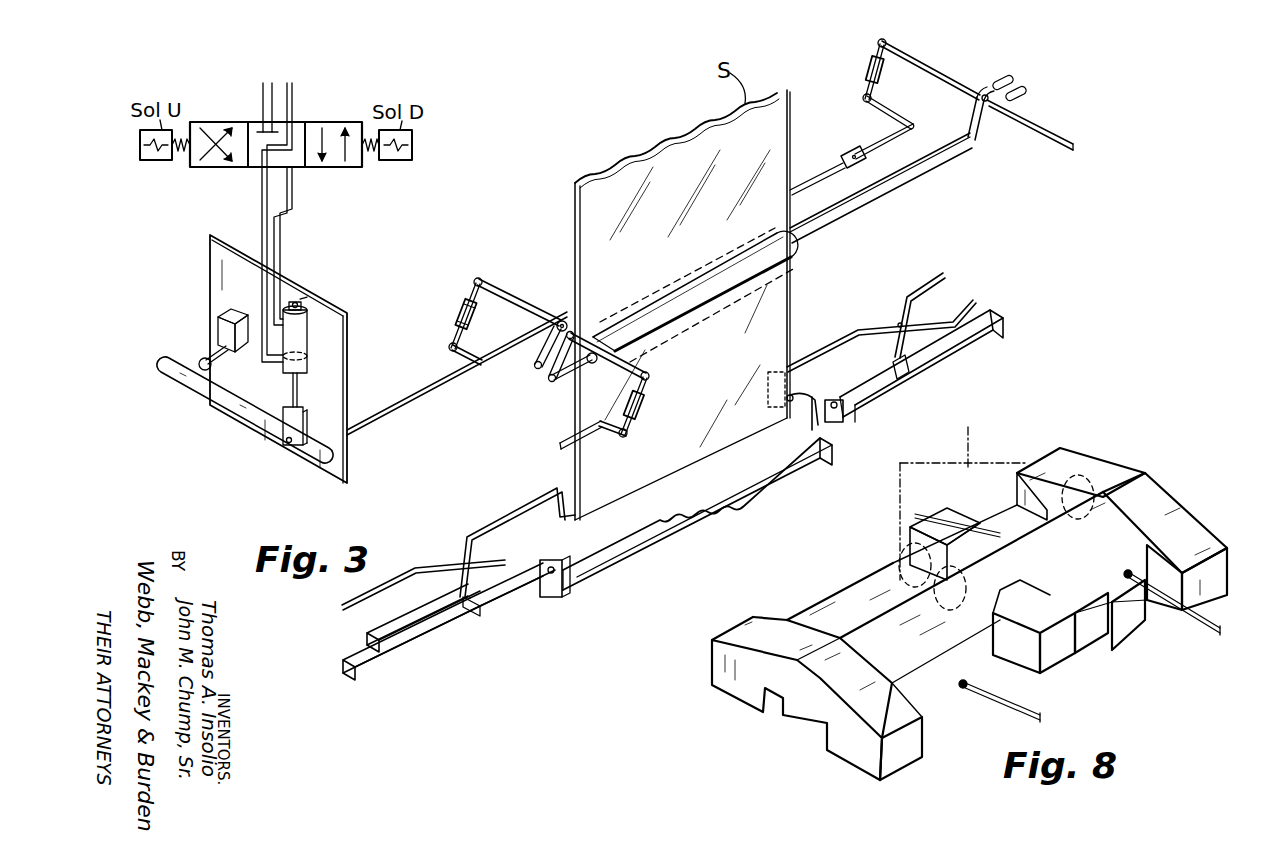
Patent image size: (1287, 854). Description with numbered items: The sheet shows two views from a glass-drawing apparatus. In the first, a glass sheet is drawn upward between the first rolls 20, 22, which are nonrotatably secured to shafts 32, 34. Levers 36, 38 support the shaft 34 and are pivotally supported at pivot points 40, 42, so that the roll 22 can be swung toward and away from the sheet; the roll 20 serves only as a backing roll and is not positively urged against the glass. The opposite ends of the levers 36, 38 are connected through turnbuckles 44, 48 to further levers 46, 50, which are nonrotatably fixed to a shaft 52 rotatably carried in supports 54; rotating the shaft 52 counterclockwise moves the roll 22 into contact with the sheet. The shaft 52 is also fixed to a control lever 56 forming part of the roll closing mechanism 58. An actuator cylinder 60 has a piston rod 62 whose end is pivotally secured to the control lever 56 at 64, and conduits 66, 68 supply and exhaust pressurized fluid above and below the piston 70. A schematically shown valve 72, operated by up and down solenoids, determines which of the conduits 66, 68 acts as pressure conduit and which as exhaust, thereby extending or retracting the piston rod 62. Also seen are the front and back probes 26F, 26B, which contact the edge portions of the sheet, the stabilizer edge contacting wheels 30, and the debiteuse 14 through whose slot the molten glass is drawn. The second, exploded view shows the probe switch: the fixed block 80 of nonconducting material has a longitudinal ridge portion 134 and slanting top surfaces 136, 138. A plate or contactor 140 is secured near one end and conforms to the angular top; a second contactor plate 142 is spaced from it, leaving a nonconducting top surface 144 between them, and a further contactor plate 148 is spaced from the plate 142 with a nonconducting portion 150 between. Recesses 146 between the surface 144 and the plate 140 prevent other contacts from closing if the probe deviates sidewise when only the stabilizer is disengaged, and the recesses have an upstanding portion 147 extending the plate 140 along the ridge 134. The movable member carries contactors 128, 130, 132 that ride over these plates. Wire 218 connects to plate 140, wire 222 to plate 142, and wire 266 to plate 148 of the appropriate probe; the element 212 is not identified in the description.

In FIG. 3, the debiteuse 14 is at (690, 525).
In FIG. 3, the first roll 20 is at (667, 327).
In FIG. 3, the first roll 22 is at (718, 253).
In FIG. 3, the back probe 26B is at (580, 512).
In FIG. 3, the front probe 26F is at (872, 351).
In FIG. 3, the edge contacting wheels 30 is at (585, 529).
In FIG. 3, the shaft 32 is at (552, 383).
In FIG. 3, the shaft 34 is at (543, 376).
In FIG. 3, the lever 36 is at (543, 353).
In FIG. 3, the lever 38 is at (970, 120).
In FIG. 3, the pivot point 40 is at (567, 322).
In FIG. 3, the pivot point 42 is at (977, 93).
In FIG. 3, the turnbuckle 44 is at (465, 315).
In FIG. 3, the lever 46 is at (453, 352).
In FIG. 3, the turnbuckle 48 is at (868, 71).
In FIG. 3, the lever 50 is at (902, 114).
In FIG. 3, the shaft 52 is at (804, 177).
In FIG. 3, the supports 54 is at (847, 148).
In FIG. 3, the control lever 56 is at (173, 373).
In FIG. 3, the roll closing mechanism 58 is at (152, 296).
In FIG. 3, the actuator cylinder 60 is at (308, 335).
In FIG. 3, the piston rod 62 is at (298, 392).
In FIG. 3, the pivotal connection 64 is at (300, 437).
In FIG. 3, the conduit 66 is at (280, 236).
In FIG. 3, the conduit 68 is at (262, 197).
In FIG. 3, the piston 70 is at (307, 356).
In FIG. 3, the valve 72 is at (327, 122).
In FIG. 8, the fixed block 80 is at (1170, 490).
In FIG. 8, the contactor 128 is at (1093, 456).
In FIG. 8, the contactor 130 is at (948, 723).
In FIG. 8, the contactor 132 is at (897, 557).
In FIG. 8, the ridge portion 134 is at (815, 665).
In FIG. 8, the slanting top surface 136 is at (900, 738).
In FIG. 8, the slanting top surface 138 is at (735, 633).
In FIG. 8, the plate 140 is at (918, 655).
In FIG. 8, the second plate 142 is at (1127, 637).
In FIG. 8, the nonconducting top surface 144 is at (1075, 667).
In FIG. 8, the recesses 146 is at (993, 665).
In FIG. 8, the upstanding portion 147 is at (1027, 653).
In FIG. 8, the plate 148 is at (1180, 507).
In FIG. 8, the nonconducting portion 150 is at (1138, 637).
In FIG. 8, the block 212 is at (946, 485).
In FIG. 8, the wire 218 is at (1010, 710).
In FIG. 8, the wire 222 is at (920, 516).
In FIG. 8, the wire 266 is at (1193, 620).